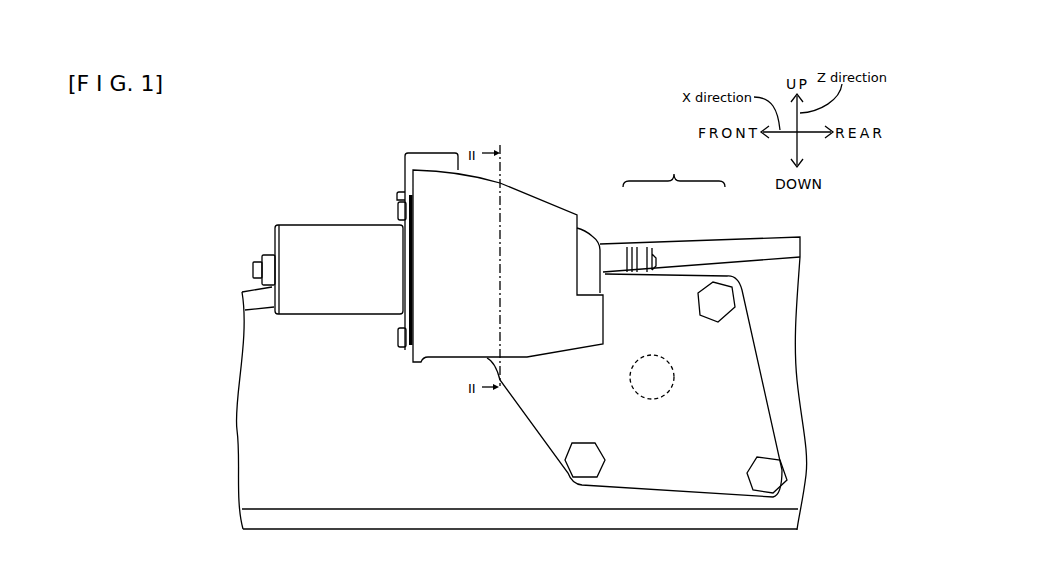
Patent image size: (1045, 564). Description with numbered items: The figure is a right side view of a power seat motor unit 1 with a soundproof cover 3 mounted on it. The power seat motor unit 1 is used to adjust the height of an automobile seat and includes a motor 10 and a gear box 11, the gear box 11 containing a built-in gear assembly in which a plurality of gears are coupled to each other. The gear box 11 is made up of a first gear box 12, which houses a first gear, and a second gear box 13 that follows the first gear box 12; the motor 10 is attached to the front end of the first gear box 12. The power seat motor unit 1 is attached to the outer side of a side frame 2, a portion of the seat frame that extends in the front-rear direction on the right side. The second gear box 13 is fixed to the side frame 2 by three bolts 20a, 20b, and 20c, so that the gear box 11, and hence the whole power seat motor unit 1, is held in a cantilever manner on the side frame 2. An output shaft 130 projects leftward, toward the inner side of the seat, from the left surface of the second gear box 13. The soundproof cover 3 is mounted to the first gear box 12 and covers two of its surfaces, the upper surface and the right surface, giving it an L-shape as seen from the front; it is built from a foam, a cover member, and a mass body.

The power seat motor unit 1 is at (336, 169).
The side frame 2 is at (393, 515).
The soundproof cover 3 is at (540, 213).
The motor 10 is at (370, 237).
The gear box 11 is at (674, 167).
The first gear box 12 is at (585, 238).
The second gear box 13 is at (651, 291).
The output shaft 130 is at (664, 360).
The bolt 20a is at (723, 304).
The bolt 20b is at (584, 452).
The bolt 20c is at (766, 462).